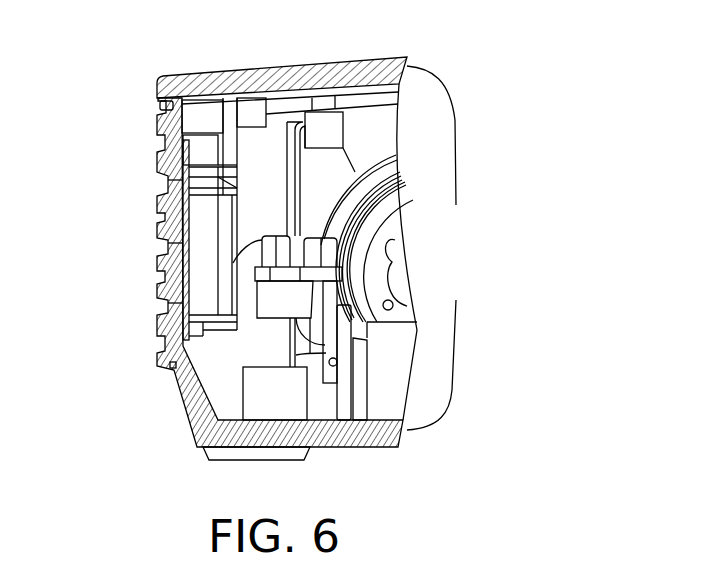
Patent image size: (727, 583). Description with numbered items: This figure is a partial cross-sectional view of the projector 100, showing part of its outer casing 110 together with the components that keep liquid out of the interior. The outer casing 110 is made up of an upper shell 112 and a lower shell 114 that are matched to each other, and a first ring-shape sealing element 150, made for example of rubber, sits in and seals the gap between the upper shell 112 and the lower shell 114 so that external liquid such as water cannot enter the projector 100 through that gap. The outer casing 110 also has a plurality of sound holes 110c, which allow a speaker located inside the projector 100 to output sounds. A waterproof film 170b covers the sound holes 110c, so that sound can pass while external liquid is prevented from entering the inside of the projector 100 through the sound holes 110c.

The projector 100 is at (558, 72).
The outer casing 110 is at (537, 214).
The upper shell 112 is at (456, 205).
The lower shell 114 is at (456, 300).
The sound hole 110c is at (164, 182).
The first ring-shape sealing element 150 is at (160, 105).
The waterproof film 170b is at (174, 367).